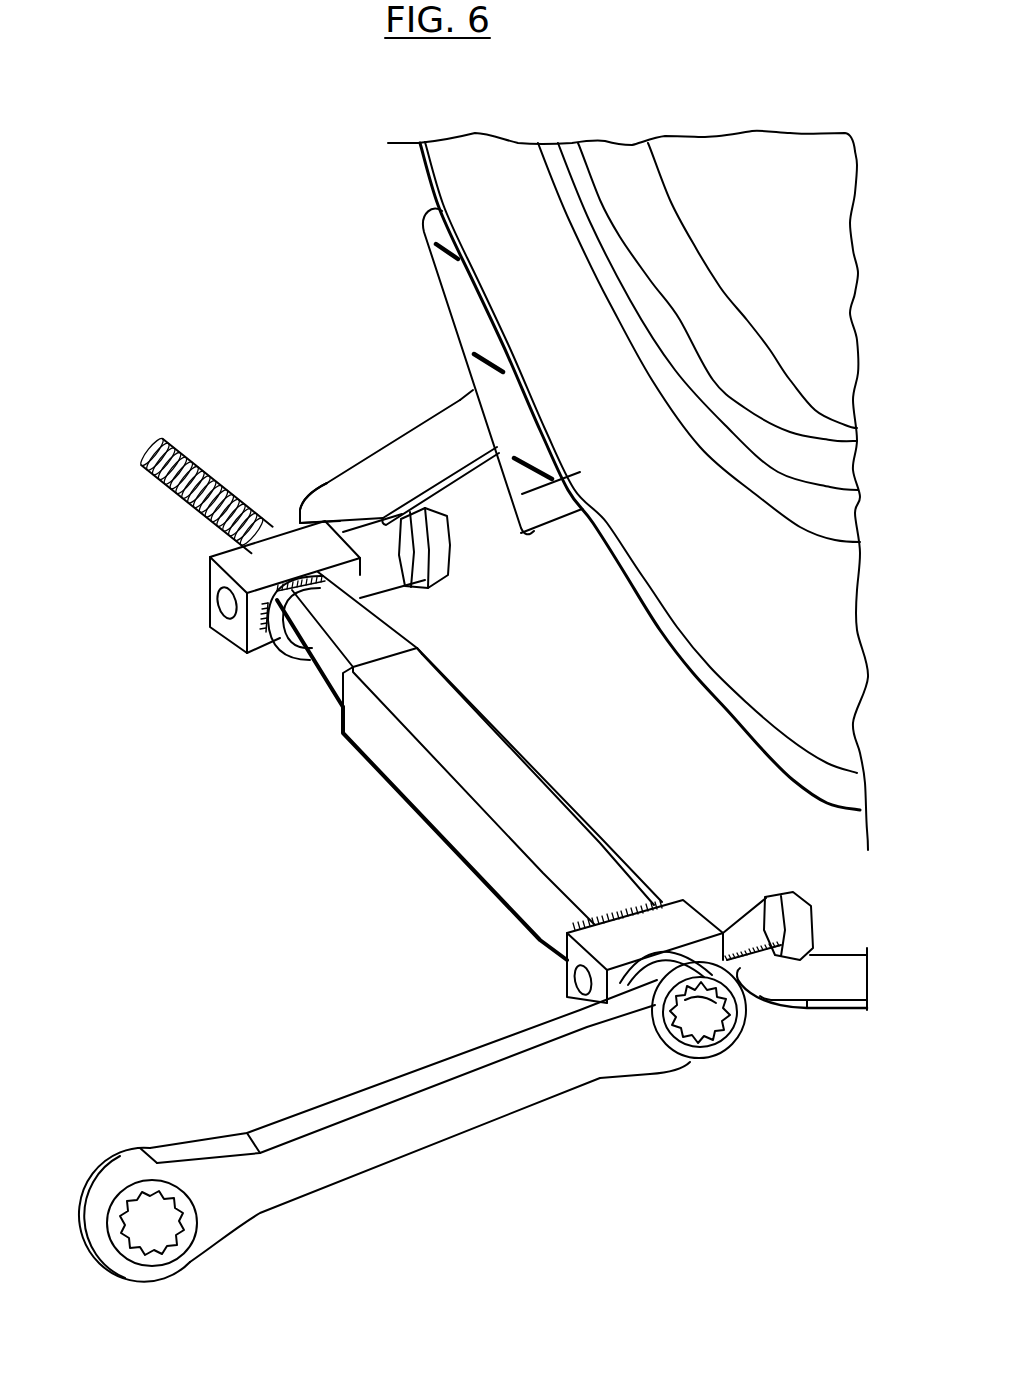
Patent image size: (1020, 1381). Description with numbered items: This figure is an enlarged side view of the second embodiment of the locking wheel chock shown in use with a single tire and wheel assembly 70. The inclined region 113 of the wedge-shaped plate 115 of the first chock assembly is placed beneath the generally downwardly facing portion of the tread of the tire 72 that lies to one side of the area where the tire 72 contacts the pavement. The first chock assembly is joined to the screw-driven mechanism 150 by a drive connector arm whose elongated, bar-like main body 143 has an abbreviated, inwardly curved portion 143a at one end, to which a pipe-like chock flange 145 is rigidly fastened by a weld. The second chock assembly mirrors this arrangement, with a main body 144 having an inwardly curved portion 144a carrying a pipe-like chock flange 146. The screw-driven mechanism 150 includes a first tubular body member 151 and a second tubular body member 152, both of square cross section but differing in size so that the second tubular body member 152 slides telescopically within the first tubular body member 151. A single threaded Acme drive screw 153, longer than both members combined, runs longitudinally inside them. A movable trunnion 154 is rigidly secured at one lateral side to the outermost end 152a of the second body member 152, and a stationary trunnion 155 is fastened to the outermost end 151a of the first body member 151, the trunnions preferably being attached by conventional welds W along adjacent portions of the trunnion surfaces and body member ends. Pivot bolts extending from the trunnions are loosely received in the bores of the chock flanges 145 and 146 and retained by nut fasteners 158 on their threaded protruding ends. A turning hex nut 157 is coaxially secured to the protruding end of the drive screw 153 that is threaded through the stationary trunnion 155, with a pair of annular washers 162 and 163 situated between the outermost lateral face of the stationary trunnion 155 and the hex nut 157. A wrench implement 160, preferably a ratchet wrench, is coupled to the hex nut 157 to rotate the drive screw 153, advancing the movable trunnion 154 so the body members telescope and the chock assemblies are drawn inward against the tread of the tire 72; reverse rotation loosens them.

The tire and wheel assembly 70 is at (757, 126).
The tire 72 is at (800, 630).
The inclined region 113 is at (463, 300).
The wedge-shaped plate 115 is at (383, 332).
The main body 143 is at (437, 440).
The inwardly curved portion 143a is at (340, 512).
The main body 144 is at (848, 978).
The inwardly curved portion 144a is at (772, 1000).
The chock flange 145 is at (400, 590).
The chock flange 146 is at (743, 923).
The screw-driven mechanism 150 is at (384, 719).
The first tubular body member 151 is at (423, 790).
The outermost end 151a is at (600, 900).
The second tubular body member 152 is at (328, 677).
The outermost end 152a is at (295, 667).
The drive screw 153 is at (163, 493).
The movable trunnion 154 is at (207, 559).
The stationary trunnion 155 is at (672, 917).
The turning hex nut 157 is at (700, 1027).
The nut fasteners 158 is at (452, 568).
The wrench implement 160 is at (511, 1122).
The annular washer 162 is at (593, 913).
The annular washer 163 is at (577, 953).
The welds W is at (298, 660).